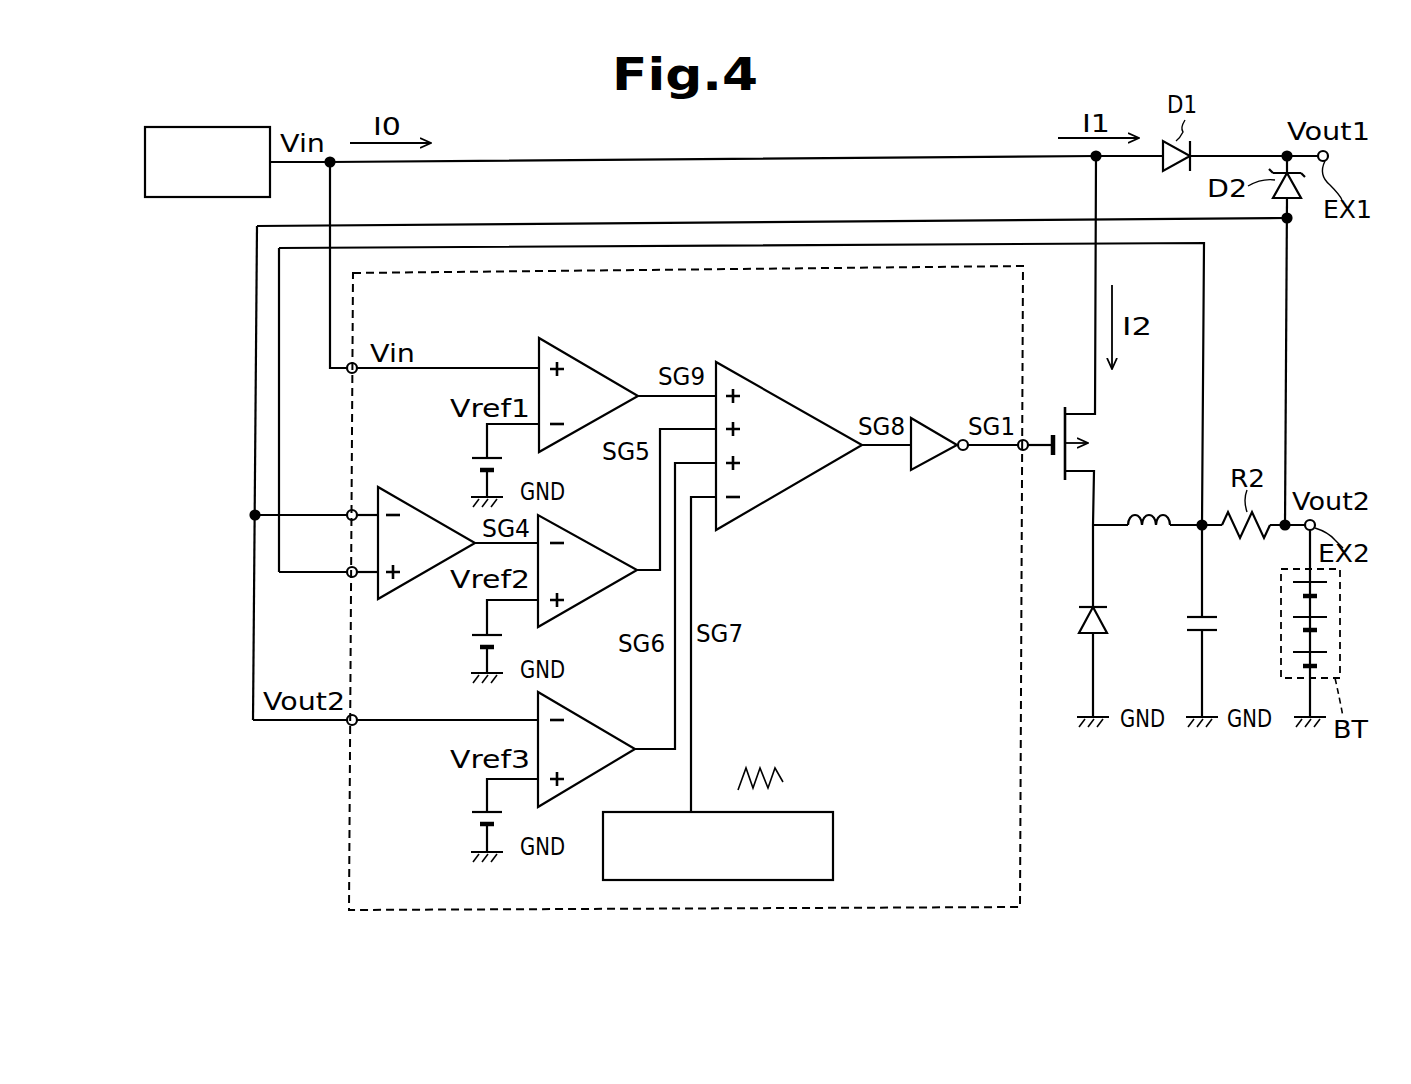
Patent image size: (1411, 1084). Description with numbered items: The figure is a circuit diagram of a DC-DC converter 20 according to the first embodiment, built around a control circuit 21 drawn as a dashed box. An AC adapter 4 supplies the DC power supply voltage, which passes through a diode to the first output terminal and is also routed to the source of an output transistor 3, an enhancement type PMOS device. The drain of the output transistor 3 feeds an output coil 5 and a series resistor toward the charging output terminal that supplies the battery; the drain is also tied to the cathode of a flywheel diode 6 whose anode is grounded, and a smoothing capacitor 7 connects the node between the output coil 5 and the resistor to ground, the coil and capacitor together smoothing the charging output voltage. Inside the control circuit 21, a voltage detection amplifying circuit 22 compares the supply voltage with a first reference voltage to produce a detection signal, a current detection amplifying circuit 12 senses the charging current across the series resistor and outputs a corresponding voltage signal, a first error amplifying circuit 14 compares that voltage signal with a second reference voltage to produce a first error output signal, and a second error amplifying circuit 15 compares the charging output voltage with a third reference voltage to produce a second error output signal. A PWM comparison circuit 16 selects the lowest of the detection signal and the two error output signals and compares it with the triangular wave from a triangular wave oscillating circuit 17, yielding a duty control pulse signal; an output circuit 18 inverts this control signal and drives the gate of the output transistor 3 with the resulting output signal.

The AC adapter 4 is at (243, 128).
The DC-DC converter 20 is at (966, 122).
The control circuit 21 is at (1020, 868).
The voltage detection amplifying circuit 22 is at (573, 355).
The current detection amplifying circuit 12 is at (412, 505).
The first error amplifying circuit 14 is at (575, 536).
The second error amplifying circuit 15 is at (575, 712).
The PWM comparison circuit 16 is at (790, 404).
The triangular wave oscillating circuit 17 is at (833, 835).
The output circuit 18 is at (930, 428).
The output transistor 3 is at (1063, 410).
The output coil 5 is at (1152, 508).
The flywheel diode 6 is at (1107, 622).
The smoothing capacitor 7 is at (1217, 617).